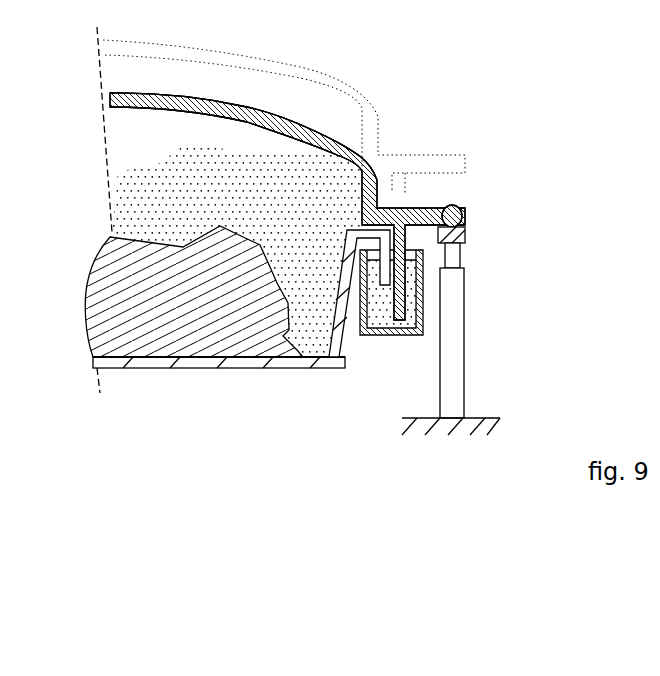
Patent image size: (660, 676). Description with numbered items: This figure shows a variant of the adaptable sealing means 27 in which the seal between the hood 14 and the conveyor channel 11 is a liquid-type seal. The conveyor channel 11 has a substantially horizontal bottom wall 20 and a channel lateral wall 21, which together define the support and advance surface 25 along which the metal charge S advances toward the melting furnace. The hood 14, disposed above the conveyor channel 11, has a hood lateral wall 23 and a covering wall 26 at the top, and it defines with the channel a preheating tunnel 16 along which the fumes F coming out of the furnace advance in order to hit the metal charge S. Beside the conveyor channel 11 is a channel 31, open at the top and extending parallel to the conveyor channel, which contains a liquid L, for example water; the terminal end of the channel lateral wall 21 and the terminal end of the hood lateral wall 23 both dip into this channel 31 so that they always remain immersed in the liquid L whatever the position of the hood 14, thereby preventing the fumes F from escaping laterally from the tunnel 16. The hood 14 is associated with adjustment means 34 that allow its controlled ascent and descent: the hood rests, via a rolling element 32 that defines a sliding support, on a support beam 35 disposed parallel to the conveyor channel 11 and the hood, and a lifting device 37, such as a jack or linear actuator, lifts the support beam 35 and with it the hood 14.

The hood 14 is at (198, 95).
The covering wall 26 is at (276, 117).
The hood lateral wall 23 is at (372, 191).
The rolling element 32 is at (453, 213).
The support beam 35 is at (458, 236).
The channel lateral wall 21 is at (353, 252).
The lifting device 37 is at (454, 330).
The adjustment means 34 is at (488, 355).
The adaptable sealing means 27 is at (374, 358).
The liquid L is at (376, 312).
The channel 31 is at (407, 334).
The preheating tunnel 16 is at (139, 109).
The fumes F is at (139, 202).
The metal charge S is at (112, 300).
The conveyor channel 11 is at (140, 370).
The bottom wall 20 is at (207, 364).
The support and advance surface 25 is at (232, 357).